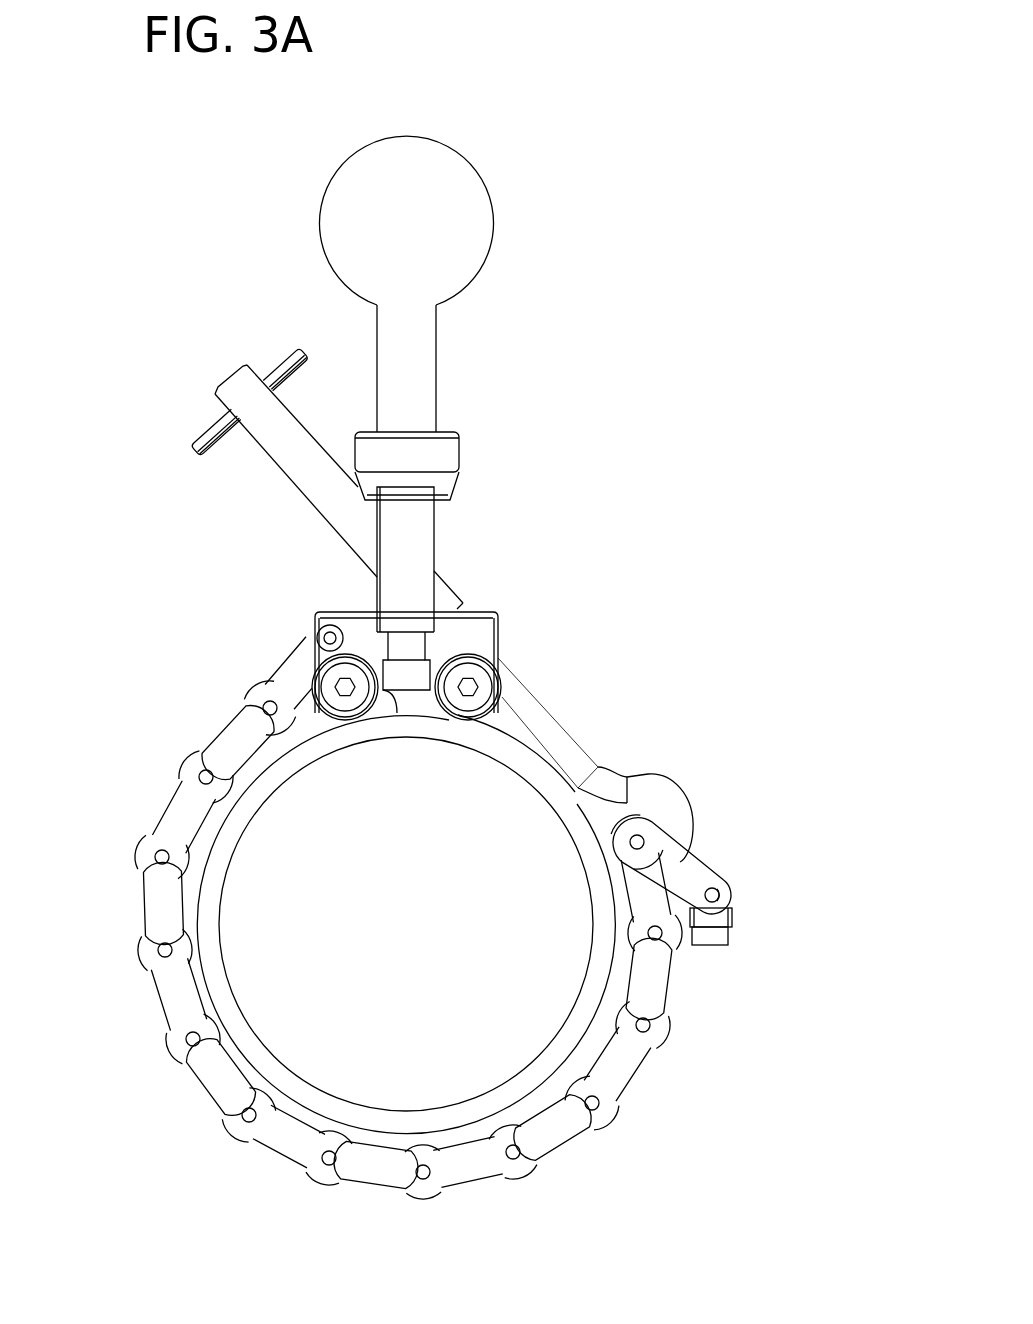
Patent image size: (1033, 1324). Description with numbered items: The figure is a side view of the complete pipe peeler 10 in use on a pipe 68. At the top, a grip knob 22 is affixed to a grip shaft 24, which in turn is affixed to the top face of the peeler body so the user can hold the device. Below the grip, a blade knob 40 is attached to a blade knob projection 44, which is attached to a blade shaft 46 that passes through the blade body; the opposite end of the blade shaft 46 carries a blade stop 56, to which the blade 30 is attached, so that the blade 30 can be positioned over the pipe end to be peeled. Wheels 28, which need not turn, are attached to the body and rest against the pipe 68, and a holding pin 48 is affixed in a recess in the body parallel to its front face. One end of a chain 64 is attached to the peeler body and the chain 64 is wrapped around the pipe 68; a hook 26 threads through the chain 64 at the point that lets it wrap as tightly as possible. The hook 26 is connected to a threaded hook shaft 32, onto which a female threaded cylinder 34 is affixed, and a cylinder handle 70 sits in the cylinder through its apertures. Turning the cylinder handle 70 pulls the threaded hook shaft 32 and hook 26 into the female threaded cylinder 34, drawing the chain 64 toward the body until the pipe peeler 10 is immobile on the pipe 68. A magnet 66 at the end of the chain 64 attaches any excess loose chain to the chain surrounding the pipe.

The pipe peeler 10 is at (642, 190).
The grip knob 22 is at (493, 235).
The grip shaft 24 is at (436, 348).
The hook 26 is at (693, 803).
The wheels 28 is at (490, 667).
The blade 30 is at (395, 710).
The threaded hook shaft 32 is at (553, 713).
The female threaded cylinder 34 is at (233, 385).
The blade knob 40 is at (460, 457).
The blade knob projection 44 is at (452, 488).
The blade shaft 46 is at (423, 635).
The holding pin 48 is at (332, 638).
The blade stop 56 is at (423, 665).
The chain 64 is at (180, 755).
The magnet 66 is at (712, 945).
The pipe 68 is at (233, 1032).
The cylinder handle 70 is at (203, 422).